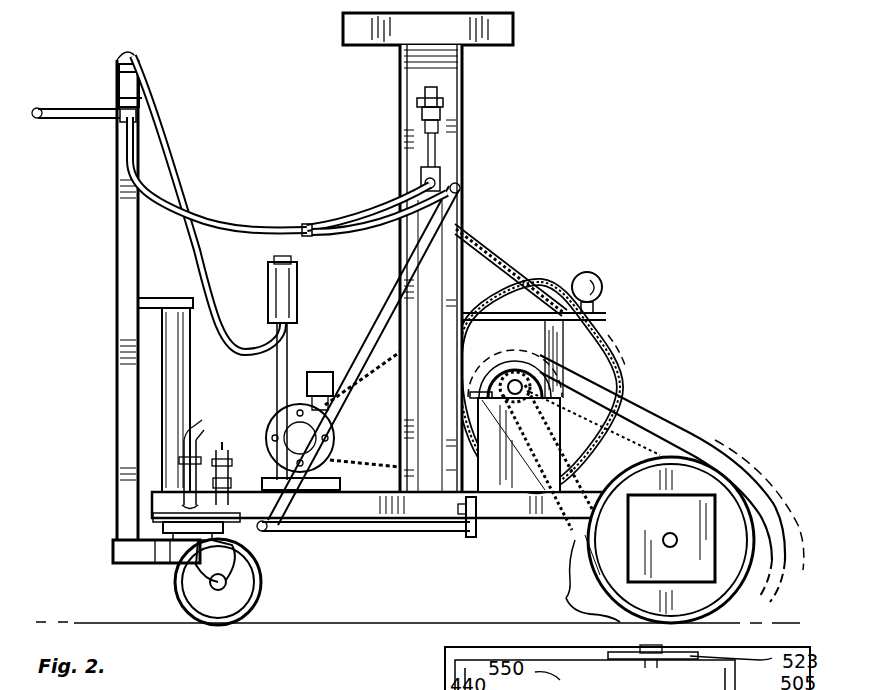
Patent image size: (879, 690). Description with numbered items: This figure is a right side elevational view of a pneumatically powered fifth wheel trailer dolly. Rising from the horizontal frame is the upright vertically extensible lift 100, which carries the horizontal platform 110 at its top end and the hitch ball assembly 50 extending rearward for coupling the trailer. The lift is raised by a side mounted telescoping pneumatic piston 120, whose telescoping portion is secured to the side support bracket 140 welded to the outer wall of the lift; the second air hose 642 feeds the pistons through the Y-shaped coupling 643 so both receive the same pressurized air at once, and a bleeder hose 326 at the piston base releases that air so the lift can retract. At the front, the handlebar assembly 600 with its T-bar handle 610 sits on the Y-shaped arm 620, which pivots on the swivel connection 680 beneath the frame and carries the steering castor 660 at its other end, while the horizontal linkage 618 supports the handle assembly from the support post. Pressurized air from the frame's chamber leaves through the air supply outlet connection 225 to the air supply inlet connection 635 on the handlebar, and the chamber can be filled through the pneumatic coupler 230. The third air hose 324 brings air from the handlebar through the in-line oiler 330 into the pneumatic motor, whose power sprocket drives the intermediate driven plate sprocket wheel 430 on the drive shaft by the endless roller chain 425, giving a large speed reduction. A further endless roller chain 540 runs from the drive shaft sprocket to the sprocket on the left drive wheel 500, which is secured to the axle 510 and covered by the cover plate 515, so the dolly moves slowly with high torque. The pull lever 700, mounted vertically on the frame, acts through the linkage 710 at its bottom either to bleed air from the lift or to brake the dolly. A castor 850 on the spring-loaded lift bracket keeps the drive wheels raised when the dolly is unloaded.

The hitch ball assembly 50 is at (597, 273).
The vertically extensible lift 100 is at (476, 128).
The horizontal platform 110 is at (513, 33).
The pneumatic piston 120 is at (412, 262).
The side support bracket 140 is at (417, 103).
The air supply outlet connection 225 is at (198, 470).
The pneumatic coupler 230 is at (226, 455).
The third air hose 324 is at (175, 137).
The bleeder hose 326 is at (476, 533).
The in-line oiler 330 is at (297, 292).
The endless roller chain 425 is at (555, 385).
The intermediate driven plate sprocket wheel 430 is at (618, 345).
The left drive wheel 500 is at (690, 436).
The axle 510 is at (752, 573).
The cover plate 515 is at (715, 514).
The endless roller chain 540 is at (580, 536).
The handlebar assembly 600 is at (108, 361).
The T-bar handle 610 is at (92, 120).
The horizontal linkage 618 is at (140, 302).
The Y-shaped arm 620 is at (238, 524).
The air supply inlet connection 635 is at (119, 84).
The second air hose 642 is at (262, 222).
The Y-shaped coupling 643 is at (308, 222).
The steering castor 660 is at (180, 604).
The swivel connection 680 is at (160, 527).
The pull lever 700 is at (458, 194).
The linkage 710 is at (370, 532).
The castor 850 is at (580, 604).